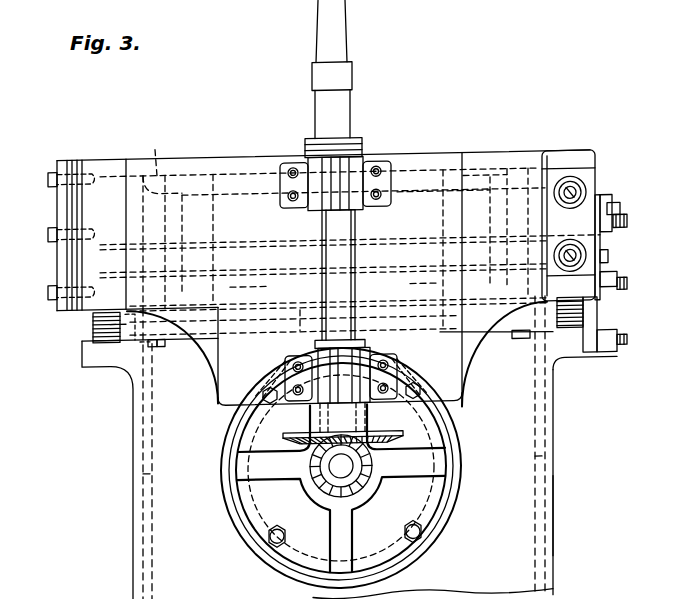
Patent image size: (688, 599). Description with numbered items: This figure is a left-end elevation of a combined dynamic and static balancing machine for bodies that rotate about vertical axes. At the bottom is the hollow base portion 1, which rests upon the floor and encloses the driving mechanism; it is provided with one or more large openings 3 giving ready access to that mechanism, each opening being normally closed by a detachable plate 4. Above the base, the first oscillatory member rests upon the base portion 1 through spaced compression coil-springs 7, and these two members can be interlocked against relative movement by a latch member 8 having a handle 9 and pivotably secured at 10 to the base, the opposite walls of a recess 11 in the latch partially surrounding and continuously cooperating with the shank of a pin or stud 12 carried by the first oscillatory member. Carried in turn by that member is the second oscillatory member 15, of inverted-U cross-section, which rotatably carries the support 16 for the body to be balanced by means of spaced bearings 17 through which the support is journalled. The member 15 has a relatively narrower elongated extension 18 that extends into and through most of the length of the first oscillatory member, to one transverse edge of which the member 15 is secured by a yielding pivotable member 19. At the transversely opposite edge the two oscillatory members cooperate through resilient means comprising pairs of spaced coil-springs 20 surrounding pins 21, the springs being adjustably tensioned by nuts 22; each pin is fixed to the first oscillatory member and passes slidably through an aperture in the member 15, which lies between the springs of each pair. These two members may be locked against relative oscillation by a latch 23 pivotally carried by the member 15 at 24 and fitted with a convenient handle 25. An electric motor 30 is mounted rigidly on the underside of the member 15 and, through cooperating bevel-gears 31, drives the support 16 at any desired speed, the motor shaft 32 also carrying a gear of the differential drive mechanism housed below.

The hollow base portion 1 is at (554, 521).
The opening 3 is at (145, 575).
The detachable plate 4 is at (554, 446).
The compression coil-spring 7 is at (105, 343).
The latch member 8 is at (598, 318).
The handle 9 is at (608, 263).
The pivot 10 is at (612, 350).
The recess 11 is at (617, 284).
The pin or stud 12 is at (624, 291).
The second oscillatory member 15 is at (472, 156).
The support 16 is at (349, 101).
The bearing 17 is at (320, 165).
The elongated extension 18 is at (324, 228).
The yielding pivotable member 19 is at (70, 206).
The coil-spring 20 is at (570, 170).
The pin 21 is at (578, 198).
The nut 22 is at (567, 248).
The latch 23 is at (601, 205).
The pivot 24 is at (627, 228).
The handle 25 is at (622, 212).
The electric motor 30 is at (462, 500).
The bevel-gear 31 is at (373, 463).
The motor shaft 32 is at (343, 463).